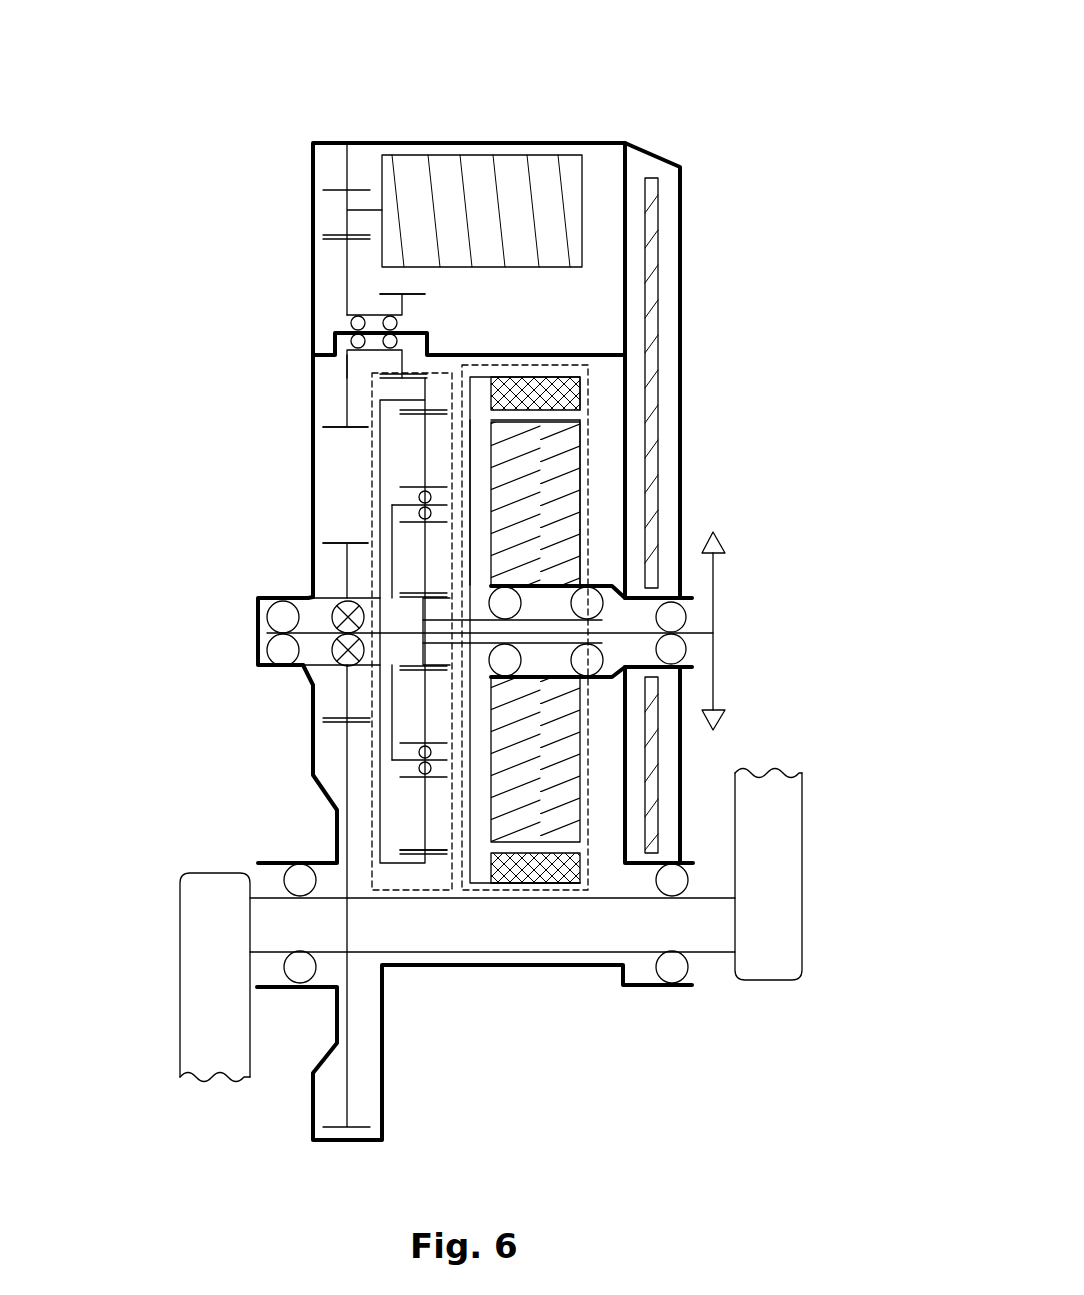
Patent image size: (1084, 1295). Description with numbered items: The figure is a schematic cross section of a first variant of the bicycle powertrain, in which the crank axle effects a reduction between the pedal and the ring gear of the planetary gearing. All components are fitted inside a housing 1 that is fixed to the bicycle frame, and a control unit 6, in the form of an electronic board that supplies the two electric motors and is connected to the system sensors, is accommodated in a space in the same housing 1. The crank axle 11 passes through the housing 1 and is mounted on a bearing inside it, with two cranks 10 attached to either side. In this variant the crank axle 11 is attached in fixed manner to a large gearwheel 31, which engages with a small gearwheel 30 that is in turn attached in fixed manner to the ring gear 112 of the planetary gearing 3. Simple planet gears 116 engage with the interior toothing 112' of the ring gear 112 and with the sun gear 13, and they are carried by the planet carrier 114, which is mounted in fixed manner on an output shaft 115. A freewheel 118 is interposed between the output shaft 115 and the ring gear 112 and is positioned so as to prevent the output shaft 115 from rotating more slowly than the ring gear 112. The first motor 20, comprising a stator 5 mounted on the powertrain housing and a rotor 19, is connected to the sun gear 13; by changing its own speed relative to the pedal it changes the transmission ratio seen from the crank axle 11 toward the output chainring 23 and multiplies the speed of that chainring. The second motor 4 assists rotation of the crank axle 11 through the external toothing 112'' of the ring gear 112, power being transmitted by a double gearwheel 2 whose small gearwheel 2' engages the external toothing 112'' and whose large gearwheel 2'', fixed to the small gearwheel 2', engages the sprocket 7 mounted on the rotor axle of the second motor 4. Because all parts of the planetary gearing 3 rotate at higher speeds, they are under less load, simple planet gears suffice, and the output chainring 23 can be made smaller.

The housing 1 is at (587, 143).
The double gearwheel 2 is at (323, 336).
The small gearwheel 2' is at (318, 266).
The large gearwheel 2'' is at (262, 454).
The planetary gearing 3 is at (375, 872).
The second motor 4 is at (490, 210).
The stator 5 is at (578, 830).
The control unit 6 is at (660, 285).
The sprocket 7 is at (334, 186).
The crank 10 is at (808, 815).
The crank axle 11 is at (682, 937).
The sun gear 13 is at (410, 668).
The rotor 19 is at (465, 858).
The first motor 20 is at (592, 883).
The output chainring 23 is at (713, 595).
The small gearwheel 30 is at (350, 575).
The large gearwheel 31 is at (350, 775).
The ring gear 112 is at (316, 631).
The interior toothing 112' is at (329, 1019).
The external toothing 112'' is at (302, 401).
The planet carrier 114 is at (397, 670).
The output shaft 115 is at (623, 630).
The simple planet gears 116 is at (427, 460).
The freewheel 118 is at (345, 612).